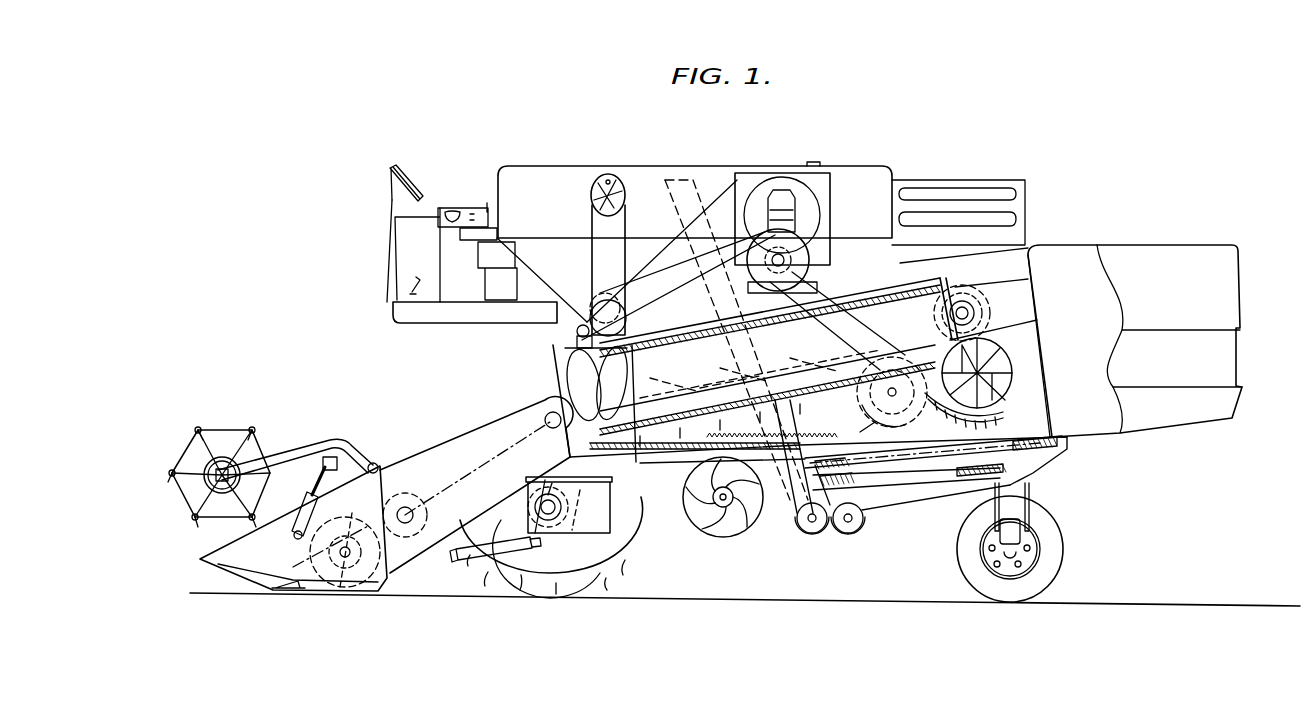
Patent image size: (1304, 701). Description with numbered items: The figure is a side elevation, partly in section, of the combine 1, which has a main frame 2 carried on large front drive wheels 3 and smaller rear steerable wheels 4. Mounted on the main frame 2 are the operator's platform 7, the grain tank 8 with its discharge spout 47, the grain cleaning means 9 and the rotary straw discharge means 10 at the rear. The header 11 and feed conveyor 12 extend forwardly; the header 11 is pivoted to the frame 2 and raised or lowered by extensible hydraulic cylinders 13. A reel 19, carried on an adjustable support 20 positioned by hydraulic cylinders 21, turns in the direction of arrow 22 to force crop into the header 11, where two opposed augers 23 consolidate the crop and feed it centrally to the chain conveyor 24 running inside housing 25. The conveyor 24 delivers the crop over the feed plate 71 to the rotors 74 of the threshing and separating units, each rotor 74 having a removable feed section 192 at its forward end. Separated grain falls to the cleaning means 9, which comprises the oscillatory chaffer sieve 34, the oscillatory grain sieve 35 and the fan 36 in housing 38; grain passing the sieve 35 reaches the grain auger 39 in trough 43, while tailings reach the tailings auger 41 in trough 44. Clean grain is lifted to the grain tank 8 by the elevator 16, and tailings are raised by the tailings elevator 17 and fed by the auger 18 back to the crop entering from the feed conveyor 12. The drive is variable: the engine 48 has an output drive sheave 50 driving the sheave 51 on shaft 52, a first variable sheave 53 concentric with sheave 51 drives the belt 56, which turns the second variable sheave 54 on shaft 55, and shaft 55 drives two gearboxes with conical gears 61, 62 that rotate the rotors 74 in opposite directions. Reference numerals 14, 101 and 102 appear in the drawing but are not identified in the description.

The combine 1 is at (839, 149).
The main frame 2 is at (695, 467).
The front drive wheels 3 is at (618, 558).
The rear steerable wheels 4 is at (958, 575).
The operator's platform 7 is at (403, 320).
The grain tank 8 is at (555, 167).
The grain cleaning means 9 is at (871, 547).
The rotary straw discharge means 10 is at (1032, 378).
The header 11 is at (351, 434).
The feed conveyor 12 is at (477, 409).
The extensible hydraulic cylinders 13 is at (463, 560).
The skid shoe 14 is at (292, 590).
The elevator 16 is at (700, 210).
The tailings elevator 17 is at (612, 314).
The auger 18 is at (576, 330).
The reel 19 is at (248, 427).
The removable feed section 192 is at (580, 368).
The adjustable support 20 is at (294, 458).
The hydraulic cylinders 21 is at (308, 500).
The arrow 22 is at (158, 459).
The opposed augers 23 is at (380, 576).
The chain conveyor 24 is at (418, 478).
The housing 25 is at (466, 438).
The oscillatory chaffer sieve 34 is at (1070, 448).
The oscillatory grain sieve 35 is at (936, 490).
The fan 36 is at (790, 512).
The housing 38 is at (702, 520).
The grain auger 39 is at (797, 532).
The tailings auger 41 is at (862, 512).
The trough 43 is at (812, 536).
The trough 44 is at (849, 536).
The discharge spout 47 is at (612, 176).
The engine 48 is at (776, 200).
The output drive sheave 50 is at (790, 256).
The sheave 51 is at (915, 420).
The shaft 52 is at (857, 433).
The first variable sheave 53 is at (850, 396).
The second variable sheave 54 is at (970, 296).
The shaft 55 is at (975, 316).
The belt 56 is at (925, 330).
The conical gears 61 is at (978, 308).
The conical gears 62 is at (948, 288).
The feed plate 71 is at (818, 460).
The rotor 74 is at (852, 297).
The fan screen 101 is at (1000, 412).
The straw chopper fan 102 is at (1000, 362).